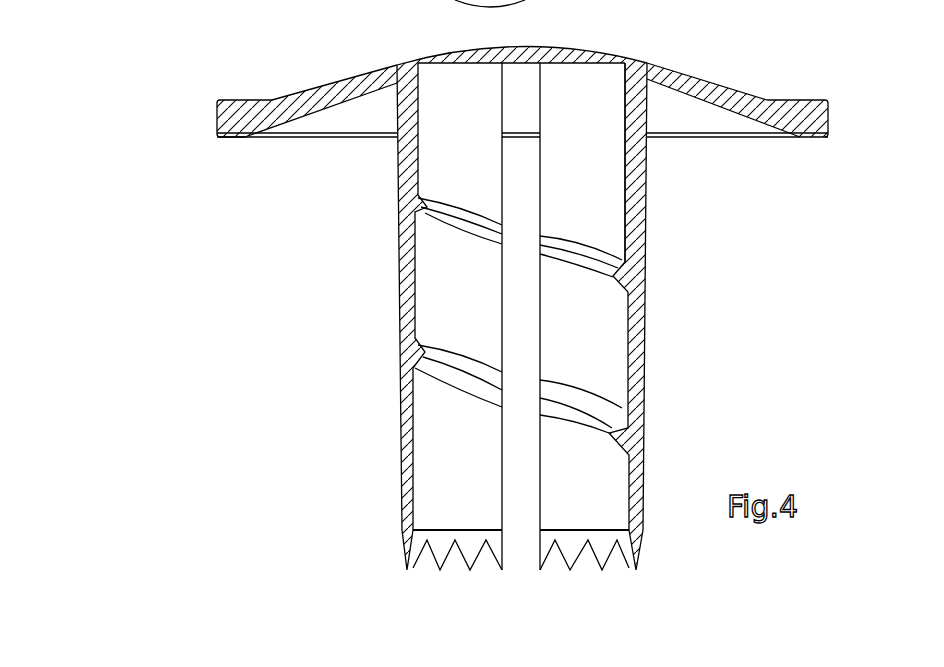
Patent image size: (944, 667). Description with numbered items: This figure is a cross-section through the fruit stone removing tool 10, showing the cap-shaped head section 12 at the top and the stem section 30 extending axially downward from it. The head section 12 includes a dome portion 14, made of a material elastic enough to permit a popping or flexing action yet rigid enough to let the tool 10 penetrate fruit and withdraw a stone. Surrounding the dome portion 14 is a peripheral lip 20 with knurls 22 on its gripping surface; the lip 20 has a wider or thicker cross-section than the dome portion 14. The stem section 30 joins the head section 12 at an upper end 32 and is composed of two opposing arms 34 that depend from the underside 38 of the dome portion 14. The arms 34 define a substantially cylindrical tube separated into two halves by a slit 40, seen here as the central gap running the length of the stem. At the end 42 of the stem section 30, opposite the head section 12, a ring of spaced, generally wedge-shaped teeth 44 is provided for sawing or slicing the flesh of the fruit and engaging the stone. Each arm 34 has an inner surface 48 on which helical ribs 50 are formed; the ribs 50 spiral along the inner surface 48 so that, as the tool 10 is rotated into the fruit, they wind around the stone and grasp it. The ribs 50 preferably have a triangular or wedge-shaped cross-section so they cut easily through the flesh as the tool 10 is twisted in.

The fruit stone removing tool 10 is at (224, 328).
The head section 12 is at (327, 67).
The dome portion 14 is at (652, 62).
The peripheral lip 20 is at (820, 100).
The knurls 22 is at (830, 120).
The stem section 30 is at (388, 272).
The upper end 32 is at (650, 95).
The opposing arms 34 is at (397, 337).
The underside of the dome 38 is at (328, 93).
The slit 40 is at (519, 548).
The end of the stem section 42 is at (645, 537).
The teeth 44 is at (433, 561).
The inner surface 48 is at (593, 147).
The helical rib 50 is at (612, 262).